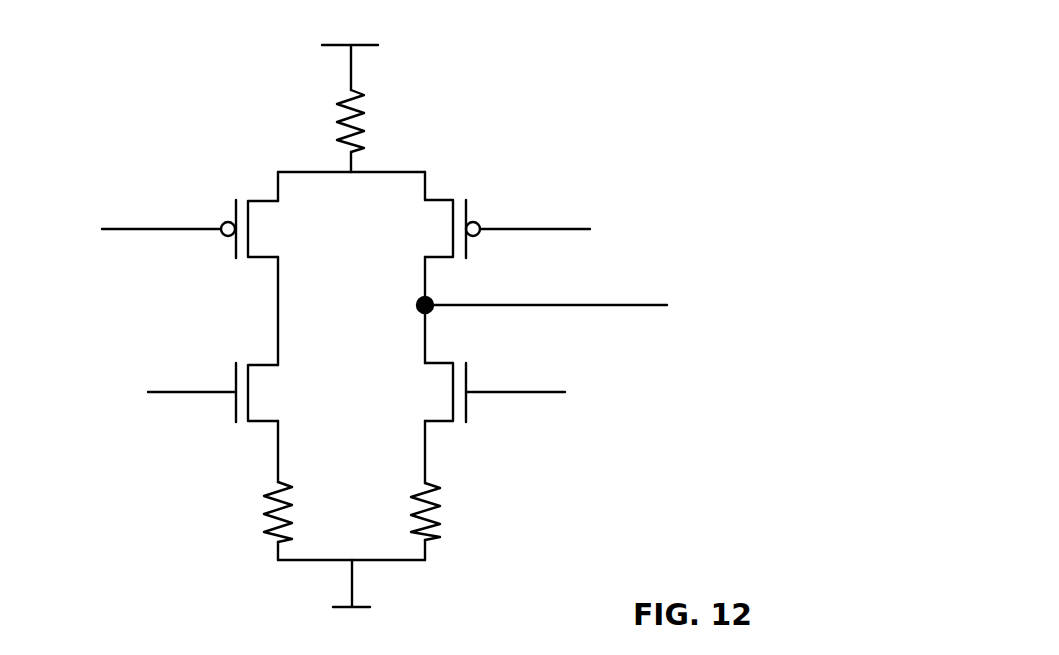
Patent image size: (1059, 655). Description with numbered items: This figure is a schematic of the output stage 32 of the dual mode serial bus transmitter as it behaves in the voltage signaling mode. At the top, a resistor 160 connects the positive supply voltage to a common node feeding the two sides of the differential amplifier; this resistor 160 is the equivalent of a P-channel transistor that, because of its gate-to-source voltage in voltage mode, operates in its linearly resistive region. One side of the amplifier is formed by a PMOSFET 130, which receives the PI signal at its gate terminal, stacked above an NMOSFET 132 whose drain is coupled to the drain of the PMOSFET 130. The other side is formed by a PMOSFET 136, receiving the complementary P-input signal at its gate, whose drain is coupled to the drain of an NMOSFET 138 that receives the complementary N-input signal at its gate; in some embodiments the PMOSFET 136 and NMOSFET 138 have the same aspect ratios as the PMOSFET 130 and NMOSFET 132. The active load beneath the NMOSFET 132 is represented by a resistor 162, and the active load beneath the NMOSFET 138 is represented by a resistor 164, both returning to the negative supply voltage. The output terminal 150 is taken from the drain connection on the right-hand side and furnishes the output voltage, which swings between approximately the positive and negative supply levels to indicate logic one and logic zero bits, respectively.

The output stage 32 is at (443, 326).
The PMOSFET 130 is at (262, 260).
The NMOSFET 132 is at (262, 424).
The PMOSFET 136 is at (440, 196).
The NMOSFET 138 is at (440, 423).
The output terminal 150 is at (566, 305).
The resistor 160 is at (358, 108).
The resistor 162 is at (267, 505).
The resistor 164 is at (437, 513).